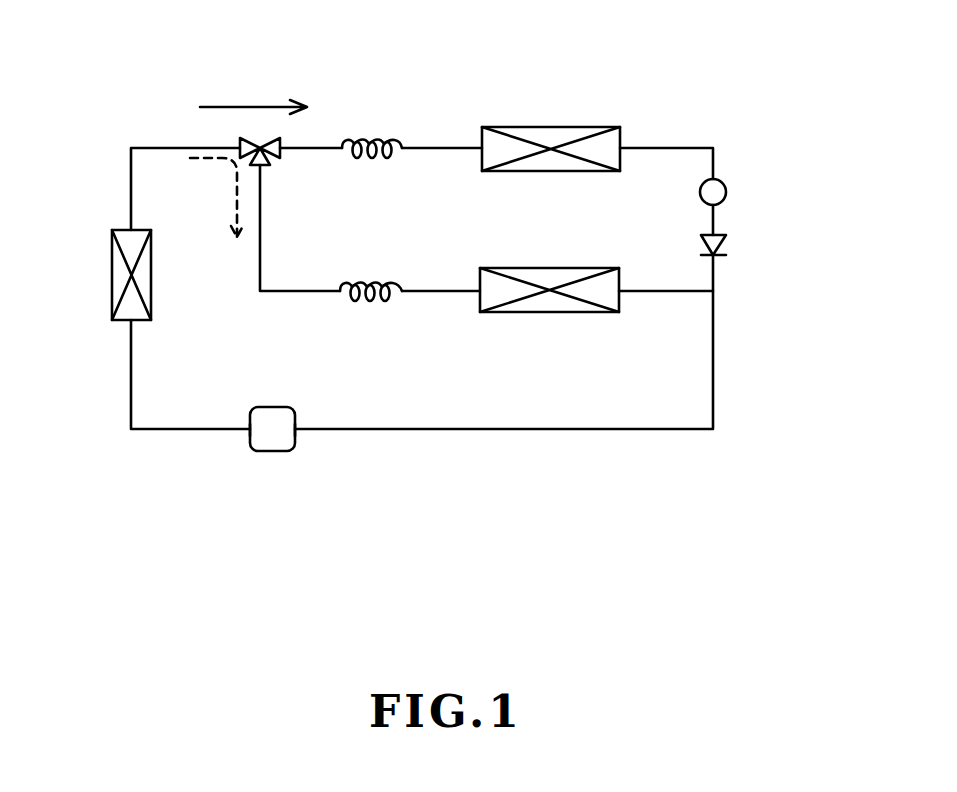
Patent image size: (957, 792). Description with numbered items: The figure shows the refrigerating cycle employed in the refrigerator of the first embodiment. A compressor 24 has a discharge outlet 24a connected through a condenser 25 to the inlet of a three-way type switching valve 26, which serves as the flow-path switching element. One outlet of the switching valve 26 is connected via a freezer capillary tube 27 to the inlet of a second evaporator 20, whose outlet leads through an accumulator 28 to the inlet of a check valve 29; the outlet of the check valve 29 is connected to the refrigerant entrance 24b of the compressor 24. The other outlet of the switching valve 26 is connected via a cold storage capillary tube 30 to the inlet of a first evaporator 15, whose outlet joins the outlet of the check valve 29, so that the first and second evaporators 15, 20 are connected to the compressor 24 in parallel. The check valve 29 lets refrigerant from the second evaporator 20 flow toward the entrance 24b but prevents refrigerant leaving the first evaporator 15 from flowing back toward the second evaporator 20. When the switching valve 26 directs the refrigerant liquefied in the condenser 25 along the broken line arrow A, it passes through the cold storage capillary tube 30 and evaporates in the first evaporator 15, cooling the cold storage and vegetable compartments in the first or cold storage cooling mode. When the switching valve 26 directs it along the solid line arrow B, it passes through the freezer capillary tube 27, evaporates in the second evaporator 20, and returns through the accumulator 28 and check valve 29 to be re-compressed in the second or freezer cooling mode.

The first evaporator 15 is at (553, 314).
The second evaporator 20 is at (555, 126).
The compressor 24 is at (275, 452).
The discharge outlet 24a is at (247, 433).
The refrigerant entrance 24b is at (297, 435).
The condenser 25 is at (112, 272).
The three-way type switching valve 26 is at (278, 168).
The freezer capillary tube 27 is at (383, 133).
The accumulator 28 is at (727, 189).
The check valve 29 is at (727, 242).
The cold storage capillary tube 30 is at (378, 307).
The broken line arrow A is at (237, 185).
The solid line arrow B is at (255, 105).